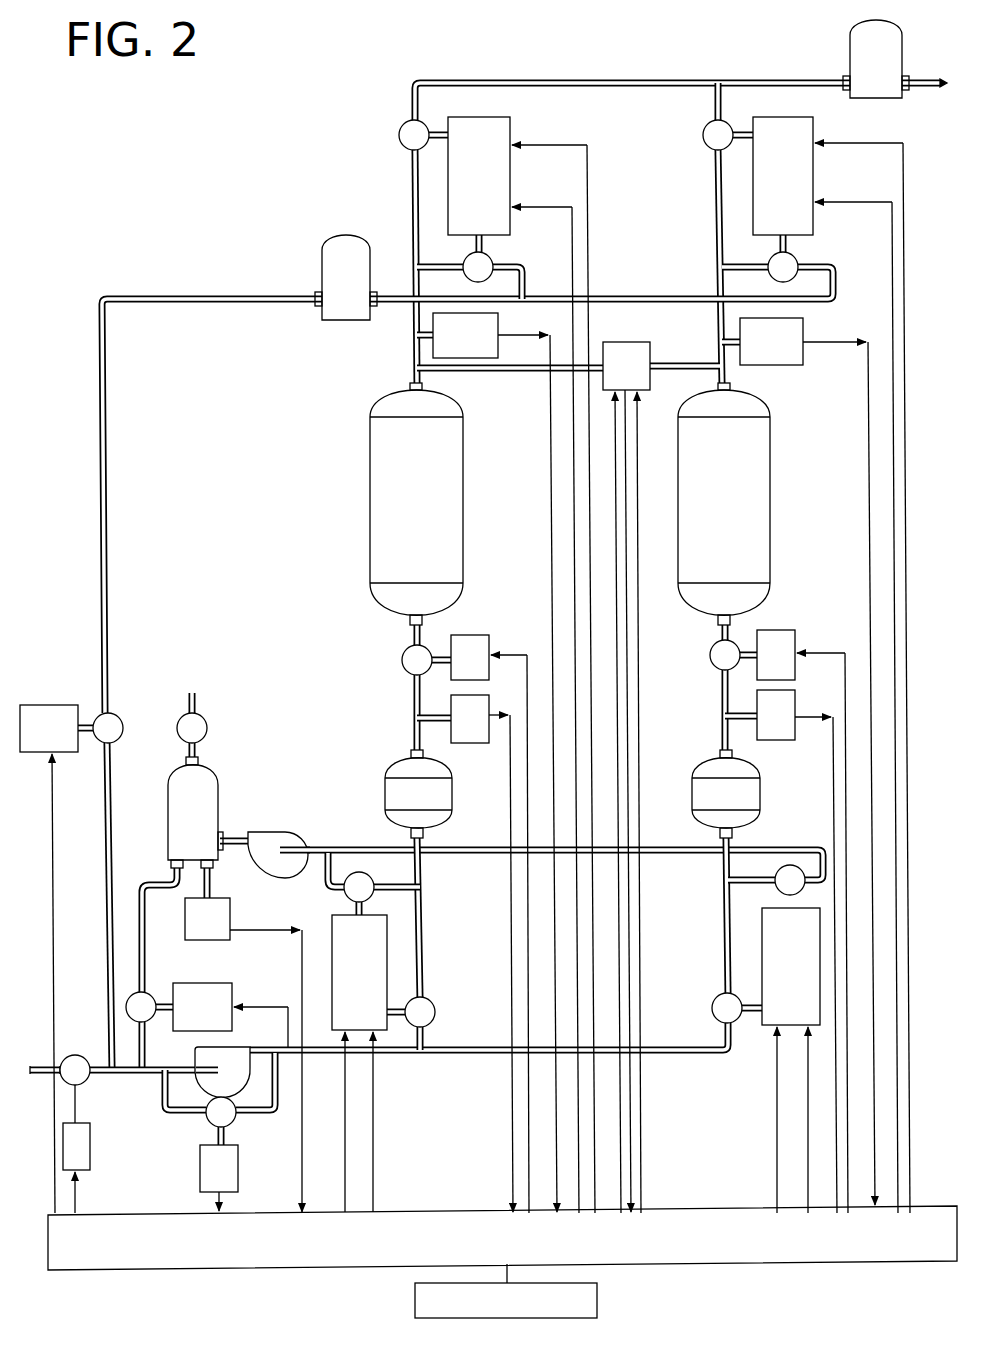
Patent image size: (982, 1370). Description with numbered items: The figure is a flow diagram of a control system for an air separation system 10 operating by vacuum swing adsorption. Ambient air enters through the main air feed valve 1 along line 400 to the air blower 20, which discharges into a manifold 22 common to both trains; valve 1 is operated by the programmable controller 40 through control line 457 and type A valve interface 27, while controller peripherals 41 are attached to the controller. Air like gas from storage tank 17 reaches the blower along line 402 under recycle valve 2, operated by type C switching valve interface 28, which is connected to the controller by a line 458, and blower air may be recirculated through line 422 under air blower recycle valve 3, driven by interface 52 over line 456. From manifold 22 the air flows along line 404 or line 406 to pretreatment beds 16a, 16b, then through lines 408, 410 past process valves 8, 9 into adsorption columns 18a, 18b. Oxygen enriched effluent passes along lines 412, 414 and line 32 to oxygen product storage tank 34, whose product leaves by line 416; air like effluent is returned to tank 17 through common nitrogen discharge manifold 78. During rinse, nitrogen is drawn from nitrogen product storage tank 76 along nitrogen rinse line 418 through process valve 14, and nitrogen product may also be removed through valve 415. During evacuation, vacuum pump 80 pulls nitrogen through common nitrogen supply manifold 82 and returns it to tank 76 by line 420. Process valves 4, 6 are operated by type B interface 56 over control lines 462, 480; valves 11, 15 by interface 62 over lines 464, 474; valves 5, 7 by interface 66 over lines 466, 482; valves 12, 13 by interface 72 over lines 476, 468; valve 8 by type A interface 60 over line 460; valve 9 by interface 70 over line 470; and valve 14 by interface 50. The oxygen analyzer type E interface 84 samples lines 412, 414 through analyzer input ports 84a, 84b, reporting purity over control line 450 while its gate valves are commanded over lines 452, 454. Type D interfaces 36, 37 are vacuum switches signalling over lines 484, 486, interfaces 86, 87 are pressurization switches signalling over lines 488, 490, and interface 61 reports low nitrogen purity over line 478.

The main air feed valve 1 is at (78, 1056).
The recycle valve 2 is at (118, 712).
The air blower recycle valve 3 is at (206, 1120).
The process valve 4 is at (433, 1002).
The process valve 5 is at (714, 997).
The process valve 6 is at (344, 895).
The process valve 7 is at (776, 889).
The process valve 8 is at (402, 654).
The process valve 9 is at (710, 652).
The air separation system 10 is at (212, 284).
The process valve 11 is at (398, 137).
The process valve 12 is at (770, 258).
The process valve 13 is at (703, 137).
The process valve 14 is at (150, 1020).
The process valve 15 is at (463, 262).
The pretreatment bed 16a is at (384, 802).
The pretreatment bed 16b is at (700, 790).
The storage tank 17 is at (318, 276).
The adsorption column 18a is at (368, 500).
The adsorption column 18b is at (770, 500).
The air blower 20 is at (205, 1088).
The manifold 22 is at (420, 1054).
The type A valve interface 27 is at (92, 1160).
The type C switching valve interface 28 is at (34, 705).
The line 32 is at (620, 78).
The oxygen product storage tank 34 is at (853, 34).
The type D switch interface 36 is at (498, 328).
The type D switch interface 37 is at (803, 335).
The programmable controller 40 is at (720, 1272).
The controller peripherals 41 is at (597, 1302).
The type A interface 50 is at (235, 994).
The type A interface 52 is at (200, 1168).
The type B interface 56 is at (390, 924).
The type A interface 60 is at (470, 634).
The type D interface 61 is at (230, 920).
The type B interface 62 is at (511, 180).
The type B interface 66 is at (762, 948).
The type A interface 70 is at (782, 629).
The type B interface 72 is at (813, 180).
The nitrogen product storage tank 76 is at (168, 803).
The common nitrogen discharge manifold 78 is at (660, 295).
The vacuum pump 80 is at (292, 832).
The common nitrogen supply manifold 82 is at (482, 846).
The type E interface 84 is at (610, 342).
The analyzer input port 84a is at (470, 373).
The analyzer input port 84b is at (700, 372).
The type D switch interface 86 is at (464, 744).
The type D switch interface 87 is at (773, 741).
The line 400 is at (146, 1076).
The line 402 is at (110, 508).
The line 404 is at (424, 843).
The line 406 is at (733, 844).
The line 408 is at (410, 632).
The line 410 is at (718, 632).
The line 412 is at (412, 202).
The line 414 is at (716, 206).
The valve 415 is at (208, 726).
The line 416 is at (930, 88).
The nitrogen rinse line 418 is at (146, 958).
The line 420 is at (238, 832).
The line 422 is at (264, 1107).
The control line 450 is at (621, 1102).
The line 452 is at (631, 1075).
The line 454 is at (641, 1122).
The line 456 is at (222, 1205).
The line 457 is at (85, 1200).
The signal line 458 is at (52, 975).
The control line 460 is at (529, 947).
The control line 462 is at (373, 1100).
The control line 464 is at (587, 163).
The control line 466 is at (777, 1058).
The control line 468 is at (903, 180).
The control line 470 is at (845, 690).
The control line 474 is at (572, 250).
The control line 476 is at (892, 262).
The control line 478 is at (302, 1158).
The control line 480 is at (345, 1090).
The line 482 is at (808, 1085).
The line 484 is at (548, 478).
The line 486 is at (868, 440).
The line 488 is at (510, 890).
The line 490 is at (833, 816).